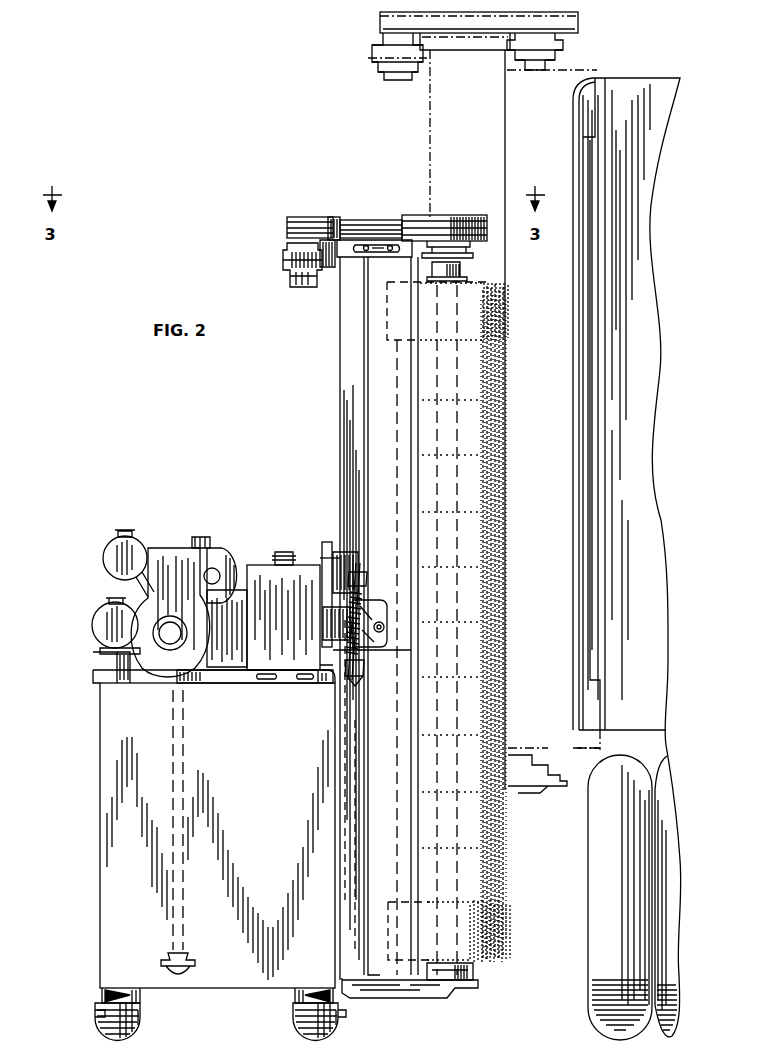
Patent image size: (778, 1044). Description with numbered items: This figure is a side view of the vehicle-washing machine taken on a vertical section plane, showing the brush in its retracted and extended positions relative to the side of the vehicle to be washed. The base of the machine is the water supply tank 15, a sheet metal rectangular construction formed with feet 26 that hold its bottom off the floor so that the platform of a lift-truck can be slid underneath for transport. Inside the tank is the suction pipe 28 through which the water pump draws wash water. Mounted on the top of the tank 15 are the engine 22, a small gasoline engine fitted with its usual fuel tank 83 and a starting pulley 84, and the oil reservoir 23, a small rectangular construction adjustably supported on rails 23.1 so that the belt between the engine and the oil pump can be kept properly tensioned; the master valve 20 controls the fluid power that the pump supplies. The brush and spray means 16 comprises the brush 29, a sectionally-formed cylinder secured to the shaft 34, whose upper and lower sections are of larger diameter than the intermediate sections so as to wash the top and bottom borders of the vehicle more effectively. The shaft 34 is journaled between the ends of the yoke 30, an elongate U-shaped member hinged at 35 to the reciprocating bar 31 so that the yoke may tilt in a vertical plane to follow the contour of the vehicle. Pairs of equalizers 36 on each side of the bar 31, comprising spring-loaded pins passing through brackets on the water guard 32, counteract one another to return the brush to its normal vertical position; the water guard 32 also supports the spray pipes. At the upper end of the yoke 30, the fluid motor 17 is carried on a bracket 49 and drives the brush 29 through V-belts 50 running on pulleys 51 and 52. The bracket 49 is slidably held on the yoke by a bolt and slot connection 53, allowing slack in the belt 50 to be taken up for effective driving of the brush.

The water supply tank 15 is at (103, 845).
The brush and spray means 16 is at (506, 358).
The fluid motor 17 is at (283, 263).
The master valve 20 is at (332, 545).
The engine 22 is at (177, 550).
The oil reservoir 23 is at (264, 565).
The rails 23.1 is at (240, 683).
The feet 26 is at (100, 1005).
The suction pipe 28 is at (180, 779).
The brush 29 is at (490, 533).
The yoke 30 is at (462, 272).
The reciprocating bar 31 is at (332, 665).
The water guard 32 is at (408, 380).
The shaft 34 is at (458, 426).
The hinge 35 is at (385, 627).
The equalizers 36 is at (370, 603).
The bracket 49 is at (334, 236).
The V-belts 50 is at (353, 220).
The pulley 51 is at (292, 222).
The pulley 52 is at (440, 218).
The bolt and slot connection 53 is at (362, 246).
The fuel tank 83 is at (131, 538).
The starting pulley 84 is at (158, 655).